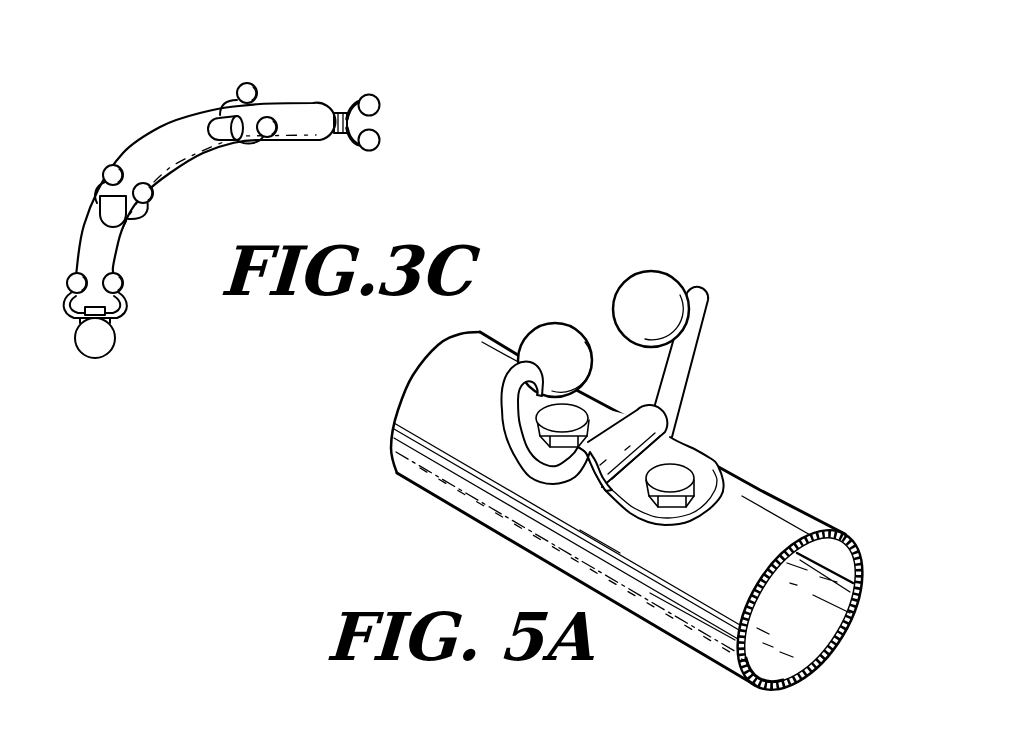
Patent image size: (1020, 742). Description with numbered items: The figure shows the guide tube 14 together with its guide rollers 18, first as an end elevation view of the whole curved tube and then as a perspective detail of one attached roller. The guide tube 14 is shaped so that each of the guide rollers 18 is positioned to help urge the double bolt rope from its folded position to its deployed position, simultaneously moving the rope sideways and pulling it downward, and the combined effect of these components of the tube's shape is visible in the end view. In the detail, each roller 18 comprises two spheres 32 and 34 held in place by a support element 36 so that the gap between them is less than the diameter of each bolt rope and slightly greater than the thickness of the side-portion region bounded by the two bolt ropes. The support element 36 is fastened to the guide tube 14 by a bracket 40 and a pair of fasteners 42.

In FIG. 3C, the guide tube 14 is at (163, 143).
In FIG. 5A, the guide tube 14 is at (780, 498).
In FIG. 3C, the guide roller 18 is at (271, 117).
In FIG. 5A, the guide roller 18 is at (690, 368).
In FIG. 5A, the sphere 32 is at (575, 363).
In FIG. 5A, the sphere 34 is at (663, 283).
In FIG. 5A, the support element 36 is at (523, 453).
In FIG. 5A, the bracket 40 is at (670, 521).
In FIG. 5A, the fastener 42 is at (587, 404).